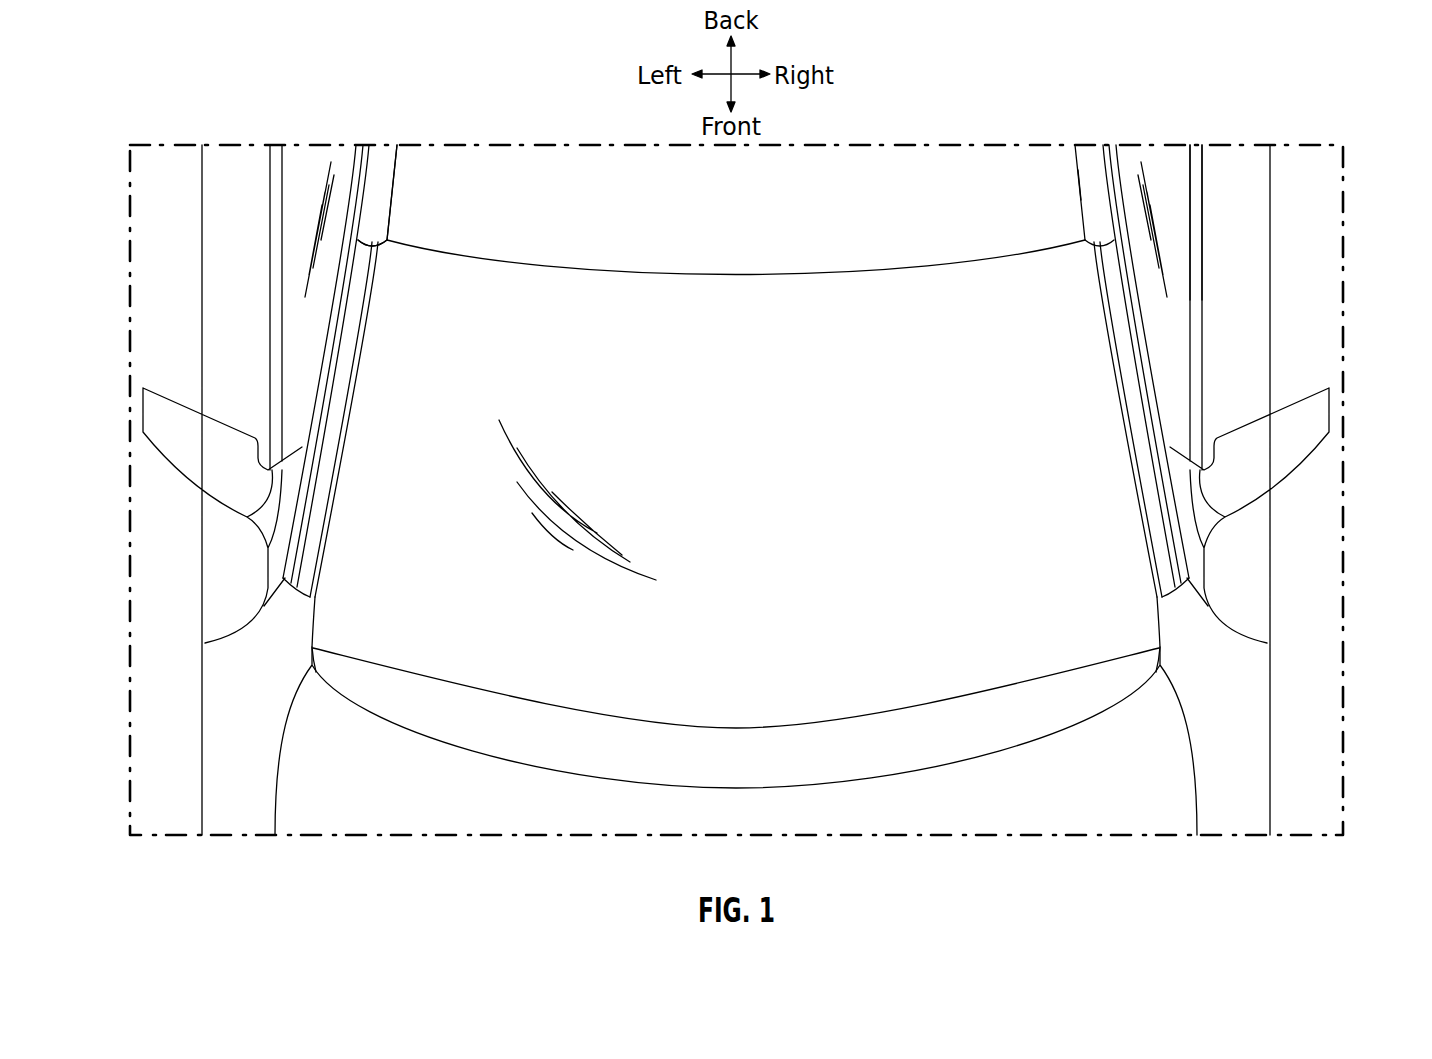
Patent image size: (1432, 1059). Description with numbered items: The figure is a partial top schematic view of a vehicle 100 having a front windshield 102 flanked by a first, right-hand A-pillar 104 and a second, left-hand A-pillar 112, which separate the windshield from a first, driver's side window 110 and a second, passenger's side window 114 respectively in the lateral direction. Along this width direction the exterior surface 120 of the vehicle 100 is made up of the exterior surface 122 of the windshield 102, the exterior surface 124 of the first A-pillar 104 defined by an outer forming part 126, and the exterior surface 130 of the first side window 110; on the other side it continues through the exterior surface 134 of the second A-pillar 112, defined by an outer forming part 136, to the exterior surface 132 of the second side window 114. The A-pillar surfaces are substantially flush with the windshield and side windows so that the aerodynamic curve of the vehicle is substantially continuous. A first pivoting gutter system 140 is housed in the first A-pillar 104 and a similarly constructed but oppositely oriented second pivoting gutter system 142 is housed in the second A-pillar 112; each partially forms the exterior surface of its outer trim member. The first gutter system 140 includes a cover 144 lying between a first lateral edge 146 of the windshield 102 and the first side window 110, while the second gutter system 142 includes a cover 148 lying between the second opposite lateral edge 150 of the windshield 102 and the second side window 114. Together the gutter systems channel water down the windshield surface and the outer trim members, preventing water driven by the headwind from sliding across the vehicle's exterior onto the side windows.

The vehicle 100 is at (928, 795).
The front windshield 102 is at (770, 302).
The first A-pillar 104 is at (1085, 215).
The first side window 110 is at (1173, 178).
The second A-pillar 112 is at (360, 205).
The second side window 114 is at (312, 248).
The exterior surface of the vehicle 120 is at (1166, 394).
The exterior surface of the windshield 122 is at (620, 302).
The exterior surface of the first A-pillar 124 is at (1088, 175).
The outer forming part 126 is at (1088, 156).
The exterior surface of the first side window 130 is at (1173, 220).
The exterior surface of the second side window 132 is at (312, 170).
The exterior surface of the second A-pillar 134 is at (385, 173).
The outer forming part 136 is at (385, 155).
The first pivoting gutter system 140 is at (1160, 505).
The second pivoting gutter system 142 is at (330, 488).
The cover 144 is at (1135, 433).
The first lateral edge 146 is at (1100, 320).
The cover 148 is at (343, 379).
The second opposite lateral edge 150 is at (372, 333).